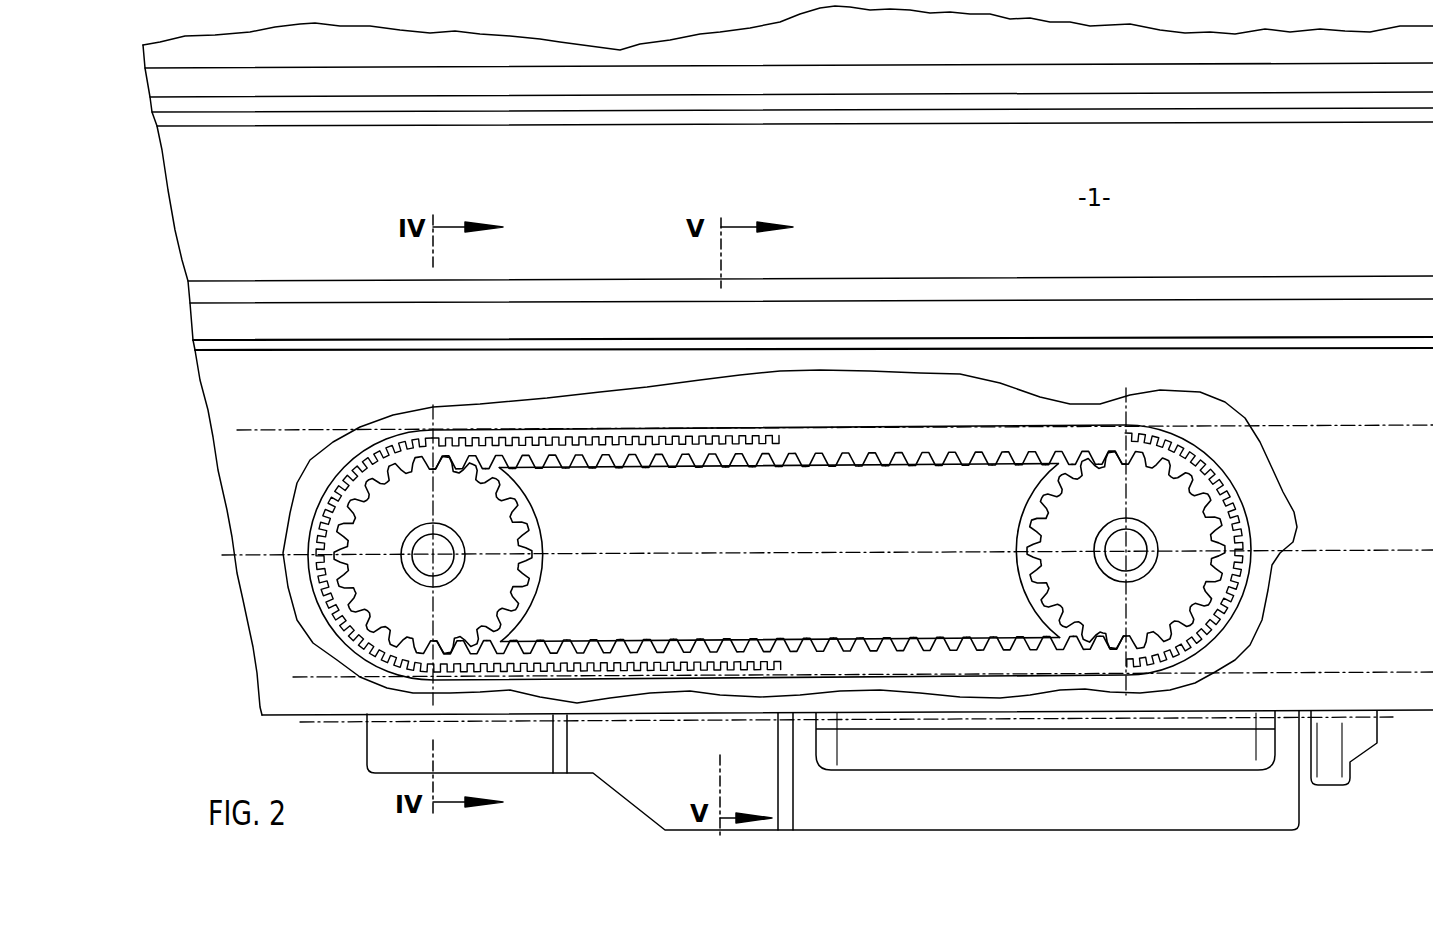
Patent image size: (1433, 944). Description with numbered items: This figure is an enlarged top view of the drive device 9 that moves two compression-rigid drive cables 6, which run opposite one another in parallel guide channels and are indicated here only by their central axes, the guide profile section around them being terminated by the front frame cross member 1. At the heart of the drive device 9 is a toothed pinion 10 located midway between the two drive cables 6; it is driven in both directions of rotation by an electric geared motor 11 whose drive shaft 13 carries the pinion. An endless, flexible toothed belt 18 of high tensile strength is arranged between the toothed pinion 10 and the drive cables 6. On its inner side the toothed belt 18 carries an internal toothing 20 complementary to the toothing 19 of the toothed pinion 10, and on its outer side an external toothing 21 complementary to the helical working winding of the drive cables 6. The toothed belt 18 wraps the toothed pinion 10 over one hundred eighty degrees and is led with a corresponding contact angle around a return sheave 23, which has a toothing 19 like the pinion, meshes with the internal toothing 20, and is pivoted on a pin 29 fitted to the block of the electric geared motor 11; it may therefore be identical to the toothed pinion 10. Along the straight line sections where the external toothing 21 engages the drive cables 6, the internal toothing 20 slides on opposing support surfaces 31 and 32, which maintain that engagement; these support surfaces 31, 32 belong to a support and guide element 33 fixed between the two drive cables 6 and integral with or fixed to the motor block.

The front frame cross member 1 is at (208, 449).
The drive cables 6 is at (1330, 426).
The drive device 9 is at (380, 580).
The toothed pinion 10 is at (464, 554).
The electric geared motor 11 is at (606, 799).
The drive shaft 13 is at (442, 560).
The toothed belt 18 is at (779, 532).
The toothing 19 is at (779, 552).
The internal toothing 20 is at (703, 468).
The external toothing 21 is at (952, 438).
The return sheave 23 is at (1096, 550).
The pin 29 is at (1117, 557).
The support surface 31 is at (847, 470).
The support surface 32 is at (713, 638).
The support and guide element 33 is at (779, 553).